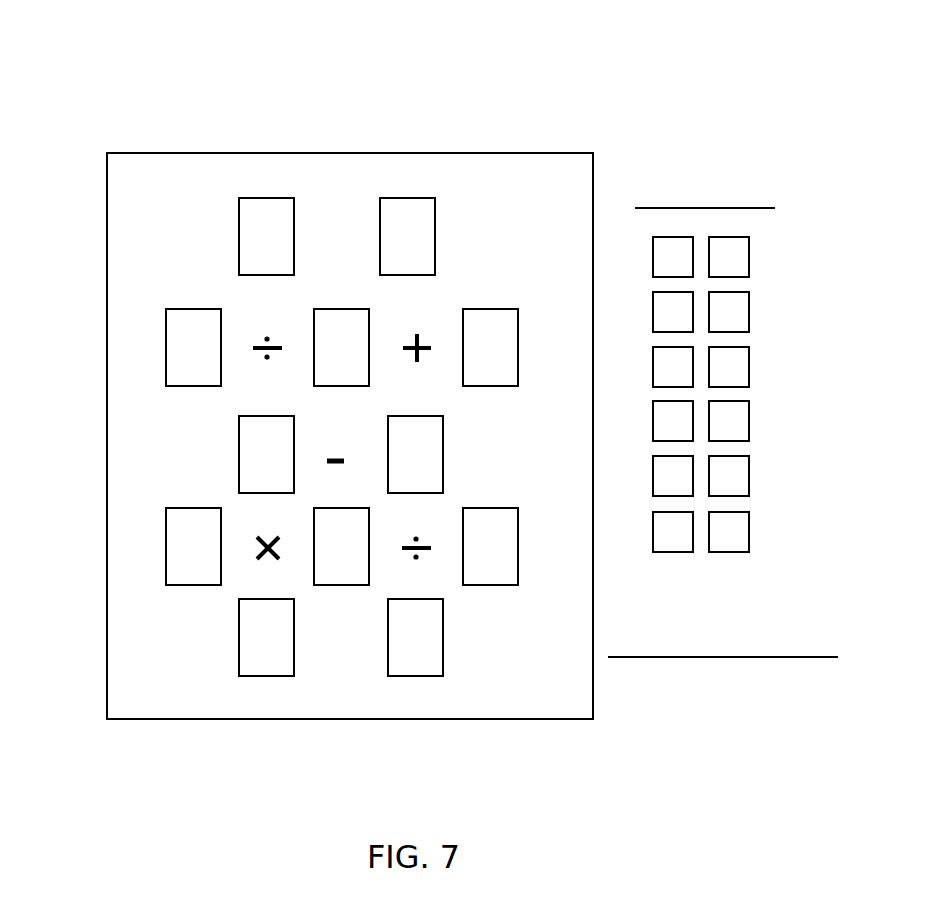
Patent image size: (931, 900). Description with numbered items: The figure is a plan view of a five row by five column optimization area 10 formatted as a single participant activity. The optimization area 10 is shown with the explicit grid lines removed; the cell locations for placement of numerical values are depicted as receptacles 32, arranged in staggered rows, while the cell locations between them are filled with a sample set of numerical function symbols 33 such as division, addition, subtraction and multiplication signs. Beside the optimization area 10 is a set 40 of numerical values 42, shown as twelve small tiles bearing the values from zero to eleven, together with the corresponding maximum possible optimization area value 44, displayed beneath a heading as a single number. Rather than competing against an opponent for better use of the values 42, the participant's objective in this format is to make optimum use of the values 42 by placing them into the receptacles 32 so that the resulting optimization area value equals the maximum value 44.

The optimization area 10 is at (106, 409).
The receptacles 32 is at (400, 195).
The numerical function symbols 33 is at (431, 523).
The set of numerical values 40 is at (731, 352).
The numerical values 42 is at (755, 477).
The maximum possible optimization area value 44 is at (764, 695).